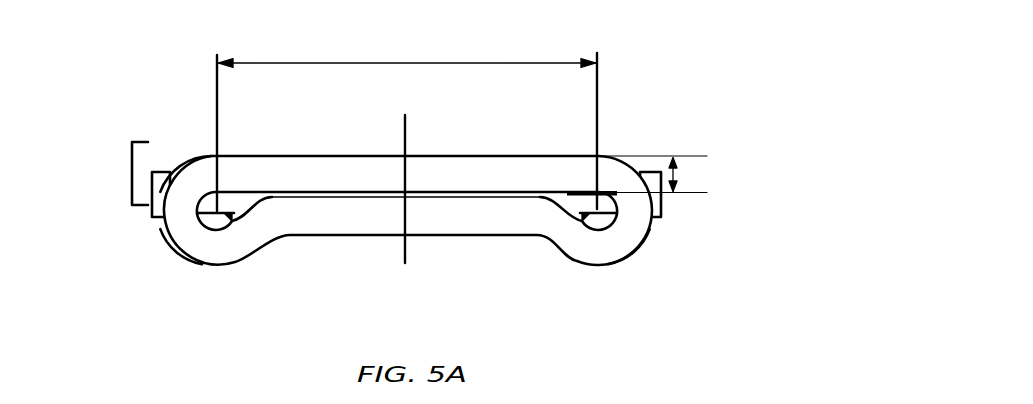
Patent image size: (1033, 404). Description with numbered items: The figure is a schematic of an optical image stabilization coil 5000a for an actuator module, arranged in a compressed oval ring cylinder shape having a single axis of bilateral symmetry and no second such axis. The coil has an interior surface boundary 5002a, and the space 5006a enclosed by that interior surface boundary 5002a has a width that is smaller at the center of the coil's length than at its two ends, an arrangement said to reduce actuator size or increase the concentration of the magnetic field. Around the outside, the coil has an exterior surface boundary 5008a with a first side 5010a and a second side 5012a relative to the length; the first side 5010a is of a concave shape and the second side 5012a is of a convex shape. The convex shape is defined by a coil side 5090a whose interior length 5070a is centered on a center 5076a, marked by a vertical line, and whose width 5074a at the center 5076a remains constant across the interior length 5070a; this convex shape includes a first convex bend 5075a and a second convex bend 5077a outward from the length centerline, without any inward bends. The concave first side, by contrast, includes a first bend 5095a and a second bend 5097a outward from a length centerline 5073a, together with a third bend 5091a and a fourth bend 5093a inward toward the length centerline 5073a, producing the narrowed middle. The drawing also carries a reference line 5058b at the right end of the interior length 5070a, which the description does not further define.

The optical image stabilization coil 5000a is at (647, 239).
The interior surface boundary 5002a is at (593, 230).
The space 5006a is at (212, 225).
The exterior surface boundary 5008a is at (623, 165).
The first side 5010a is at (450, 236).
The second side 5012a is at (538, 155).
The centerline of second end 5058b is at (600, 93).
The interior length 5070a is at (330, 64).
The length centerline 5073a is at (688, 195).
The width 5074a is at (678, 170).
The first convex bend 5075a is at (640, 170).
The center 5076a is at (405, 264).
The second convex bend 5077a is at (183, 163).
The coil side 5090a is at (131, 178).
The third bend 5091a is at (540, 240).
The fourth bend 5093a is at (281, 238).
The first bend 5095a is at (642, 247).
The second bend 5097a is at (165, 240).